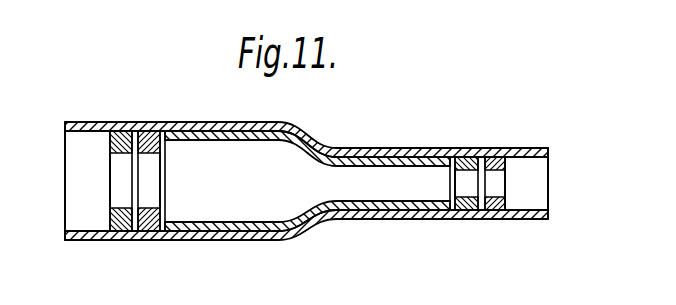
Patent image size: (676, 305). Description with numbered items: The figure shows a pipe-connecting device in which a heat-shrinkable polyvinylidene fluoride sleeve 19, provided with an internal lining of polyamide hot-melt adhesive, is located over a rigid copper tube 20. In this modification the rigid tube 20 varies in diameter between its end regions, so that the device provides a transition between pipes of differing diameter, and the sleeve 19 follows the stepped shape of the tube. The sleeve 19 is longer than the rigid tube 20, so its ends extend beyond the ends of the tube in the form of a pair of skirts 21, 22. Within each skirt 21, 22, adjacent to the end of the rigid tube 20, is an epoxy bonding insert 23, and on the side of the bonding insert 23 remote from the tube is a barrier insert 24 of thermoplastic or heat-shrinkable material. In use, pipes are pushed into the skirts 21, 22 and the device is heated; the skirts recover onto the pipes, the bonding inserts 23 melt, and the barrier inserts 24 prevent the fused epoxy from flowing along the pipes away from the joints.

The heat-shrinkable polyvinylidene fluoride sleeve 19 is at (316, 143).
The rigid copper tube 20 is at (357, 207).
The skirt 21 is at (93, 123).
The skirt 22 is at (539, 148).
The epoxy bonding insert 23 is at (150, 228).
The barrier insert 24 is at (113, 124).